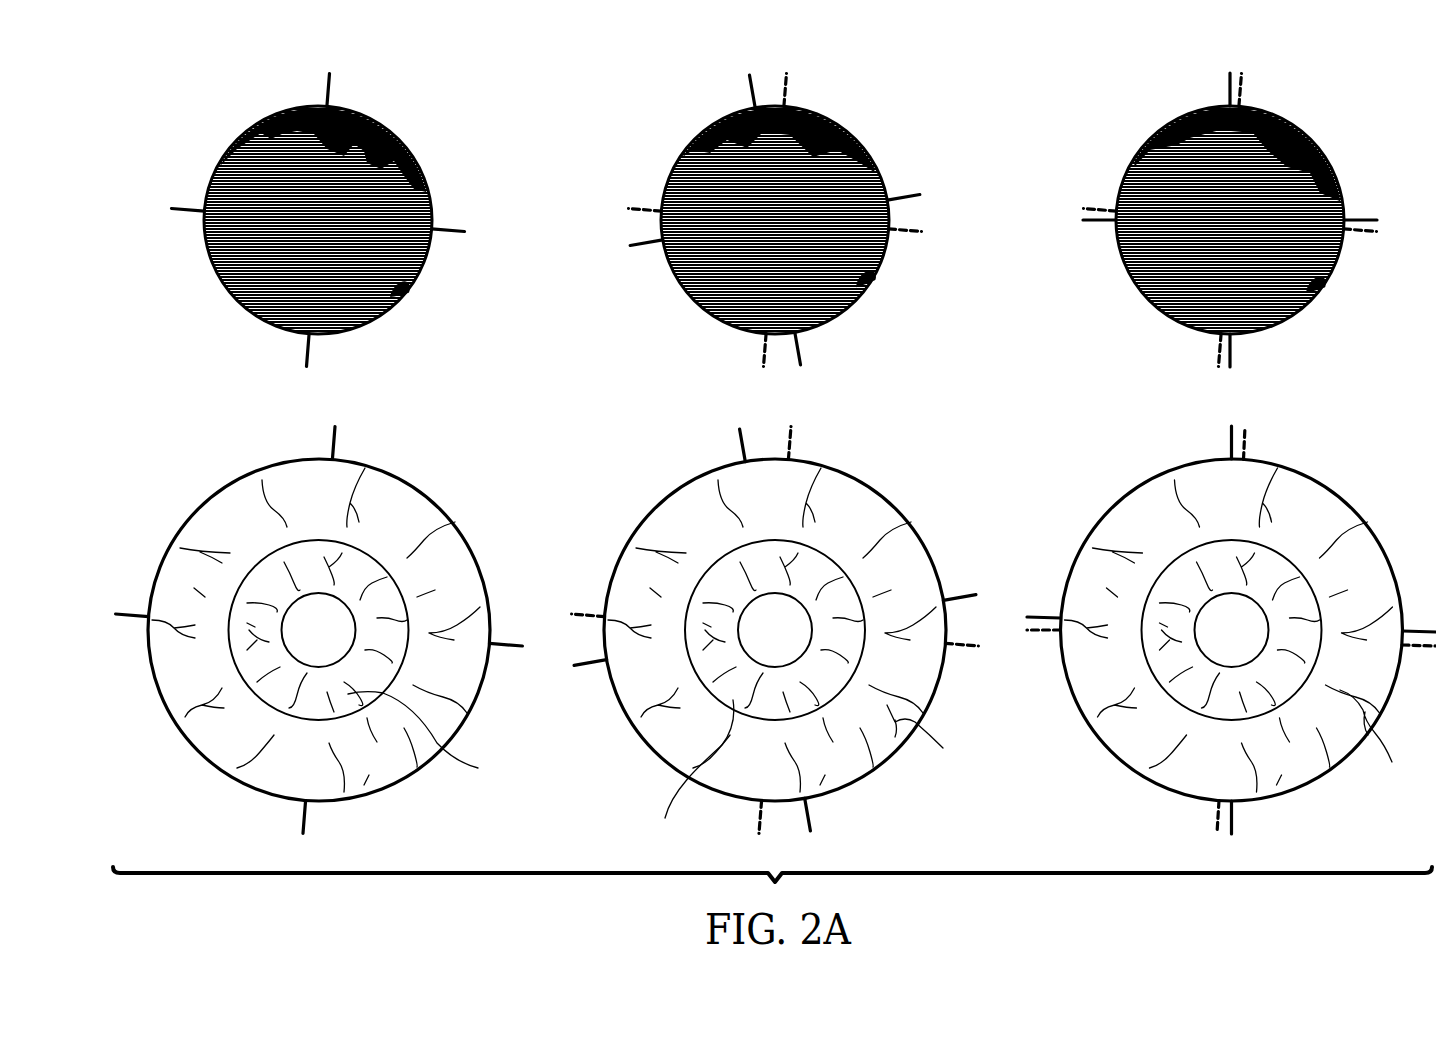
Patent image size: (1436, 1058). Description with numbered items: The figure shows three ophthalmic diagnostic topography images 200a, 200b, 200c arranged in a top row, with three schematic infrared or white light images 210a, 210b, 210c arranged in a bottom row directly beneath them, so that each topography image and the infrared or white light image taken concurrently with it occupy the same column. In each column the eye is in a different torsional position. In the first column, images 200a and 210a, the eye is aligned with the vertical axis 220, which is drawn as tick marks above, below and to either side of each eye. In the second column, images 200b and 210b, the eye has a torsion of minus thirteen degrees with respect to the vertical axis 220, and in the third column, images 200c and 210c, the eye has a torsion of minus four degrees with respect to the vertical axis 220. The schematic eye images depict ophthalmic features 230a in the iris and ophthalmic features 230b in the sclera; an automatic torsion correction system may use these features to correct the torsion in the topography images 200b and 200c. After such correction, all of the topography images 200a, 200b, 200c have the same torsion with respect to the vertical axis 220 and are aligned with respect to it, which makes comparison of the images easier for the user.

The ophthalmic diagnostic topography image 200a is at (214, 130).
The ophthalmic diagnostic topography image 200b is at (669, 130).
The ophthalmic diagnostic topography image 200c is at (1127, 130).
The infrared or white light image 210a is at (155, 515).
The infrared or white light image 210b is at (612, 515).
The infrared or white light image 210c is at (1069, 515).
The vertical axis 220 is at (324, 89).
The ophthalmic features in the iris 230a is at (541, 773).
The ophthalmic features in the sclera 230b is at (1160, 743).